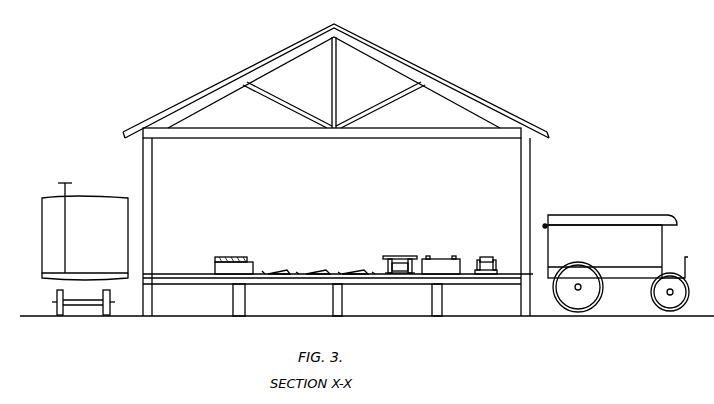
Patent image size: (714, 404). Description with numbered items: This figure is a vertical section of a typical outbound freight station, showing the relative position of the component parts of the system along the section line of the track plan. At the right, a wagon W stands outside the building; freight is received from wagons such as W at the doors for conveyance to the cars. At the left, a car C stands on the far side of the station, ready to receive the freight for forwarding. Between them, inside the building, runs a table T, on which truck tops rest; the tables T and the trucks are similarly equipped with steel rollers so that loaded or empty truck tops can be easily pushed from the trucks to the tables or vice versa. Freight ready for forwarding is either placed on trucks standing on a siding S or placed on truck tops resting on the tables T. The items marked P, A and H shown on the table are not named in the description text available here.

The car C is at (85, 249).
The plate / press P is at (237, 253).
The table T is at (337, 260).
The siding S is at (276, 268).
The article A is at (335, 268).
The holder H is at (491, 265).
The wagon W is at (616, 263).